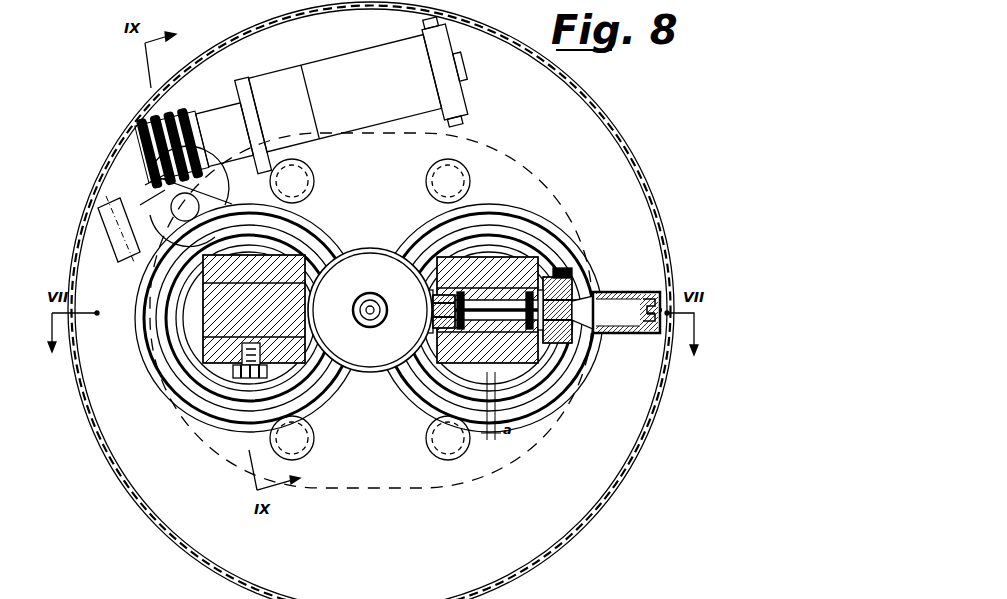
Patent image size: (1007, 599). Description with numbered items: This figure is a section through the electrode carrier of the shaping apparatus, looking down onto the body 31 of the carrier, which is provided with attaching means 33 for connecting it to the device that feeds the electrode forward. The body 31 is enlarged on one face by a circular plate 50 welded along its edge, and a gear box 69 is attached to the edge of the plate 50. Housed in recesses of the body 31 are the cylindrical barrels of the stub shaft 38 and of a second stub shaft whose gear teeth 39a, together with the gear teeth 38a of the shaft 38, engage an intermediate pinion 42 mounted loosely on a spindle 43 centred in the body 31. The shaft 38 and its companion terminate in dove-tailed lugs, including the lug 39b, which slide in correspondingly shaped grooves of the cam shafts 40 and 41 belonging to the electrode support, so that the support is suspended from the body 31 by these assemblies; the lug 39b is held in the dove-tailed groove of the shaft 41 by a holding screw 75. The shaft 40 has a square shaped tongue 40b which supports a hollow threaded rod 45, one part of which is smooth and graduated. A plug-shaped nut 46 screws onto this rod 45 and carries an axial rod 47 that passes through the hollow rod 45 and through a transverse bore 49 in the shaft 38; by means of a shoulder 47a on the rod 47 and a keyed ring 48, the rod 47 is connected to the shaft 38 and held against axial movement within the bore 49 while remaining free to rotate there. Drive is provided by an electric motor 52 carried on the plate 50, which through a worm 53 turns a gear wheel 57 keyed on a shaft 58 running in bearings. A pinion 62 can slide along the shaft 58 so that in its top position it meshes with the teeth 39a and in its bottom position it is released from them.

The body 31 is at (484, 152).
The attaching means 33 is at (297, 440).
The stub shaft 38 is at (437, 388).
The gear teeth 38a is at (474, 403).
The gear teeth 39a is at (262, 378).
The dove-tailed lug 39b is at (295, 378).
The cam shaft 40 is at (546, 386).
The square shaped tongue 40b is at (581, 367).
The cam shaft 41 is at (210, 380).
The intermediate pinion 42 is at (371, 372).
The spindle 43 is at (364, 306).
The hollow threaded rod 45 is at (590, 333).
The nut 46 is at (660, 293).
The axial rod 47 is at (592, 282).
The shoulder 47a is at (547, 290).
The keyed ring 48 is at (423, 320).
The transverse bore 49 is at (510, 384).
The upper circular plate 50 is at (598, 130).
The electric motor 52 is at (392, 112).
The worm 53 is at (168, 135).
The gear wheel 57 is at (143, 193).
The shaft 58 is at (278, 182).
The pinion 62 is at (126, 258).
The gear box 69 is at (613, 498).
The holding screw 75 is at (240, 368).